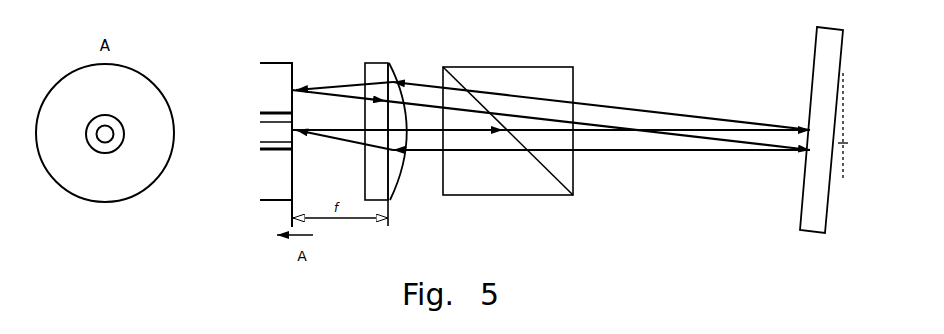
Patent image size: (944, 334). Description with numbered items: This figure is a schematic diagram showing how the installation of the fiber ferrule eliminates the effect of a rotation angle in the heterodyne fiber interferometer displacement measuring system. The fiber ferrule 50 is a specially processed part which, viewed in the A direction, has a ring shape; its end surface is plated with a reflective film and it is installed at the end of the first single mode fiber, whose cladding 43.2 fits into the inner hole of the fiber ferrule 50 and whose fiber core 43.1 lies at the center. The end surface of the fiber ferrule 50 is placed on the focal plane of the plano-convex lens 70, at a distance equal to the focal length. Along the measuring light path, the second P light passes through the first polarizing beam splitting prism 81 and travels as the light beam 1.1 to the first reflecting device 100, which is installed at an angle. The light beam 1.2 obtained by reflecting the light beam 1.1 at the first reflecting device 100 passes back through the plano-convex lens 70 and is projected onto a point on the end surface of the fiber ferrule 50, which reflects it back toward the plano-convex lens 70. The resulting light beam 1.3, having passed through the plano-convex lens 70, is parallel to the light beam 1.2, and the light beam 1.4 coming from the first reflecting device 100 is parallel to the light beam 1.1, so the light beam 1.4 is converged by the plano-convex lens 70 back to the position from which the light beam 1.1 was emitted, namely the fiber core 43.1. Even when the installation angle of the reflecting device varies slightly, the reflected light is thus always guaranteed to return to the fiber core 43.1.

The fiber ferrule 50 is at (268, 168).
The fiber core 43.1 is at (268, 128).
The cladding 43.2 is at (268, 143).
The plano-convex lens 70 is at (378, 63).
The first polarizing beam splitting prism 81 is at (507, 67).
The first reflecting device 100 is at (815, 60).
The light beam 1.1 is at (727, 128).
The light beam 1.2 is at (645, 107).
The light beam 1.3 is at (708, 142).
The light beam 1.4 is at (628, 153).